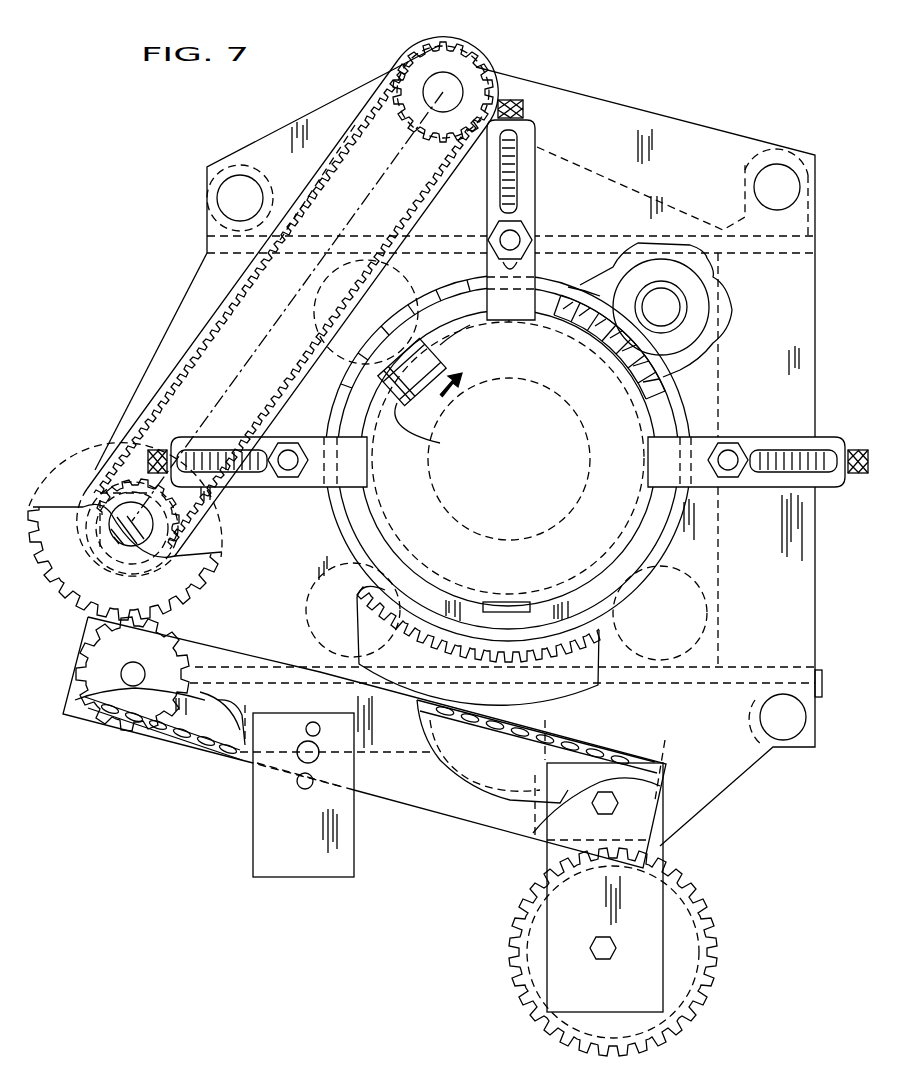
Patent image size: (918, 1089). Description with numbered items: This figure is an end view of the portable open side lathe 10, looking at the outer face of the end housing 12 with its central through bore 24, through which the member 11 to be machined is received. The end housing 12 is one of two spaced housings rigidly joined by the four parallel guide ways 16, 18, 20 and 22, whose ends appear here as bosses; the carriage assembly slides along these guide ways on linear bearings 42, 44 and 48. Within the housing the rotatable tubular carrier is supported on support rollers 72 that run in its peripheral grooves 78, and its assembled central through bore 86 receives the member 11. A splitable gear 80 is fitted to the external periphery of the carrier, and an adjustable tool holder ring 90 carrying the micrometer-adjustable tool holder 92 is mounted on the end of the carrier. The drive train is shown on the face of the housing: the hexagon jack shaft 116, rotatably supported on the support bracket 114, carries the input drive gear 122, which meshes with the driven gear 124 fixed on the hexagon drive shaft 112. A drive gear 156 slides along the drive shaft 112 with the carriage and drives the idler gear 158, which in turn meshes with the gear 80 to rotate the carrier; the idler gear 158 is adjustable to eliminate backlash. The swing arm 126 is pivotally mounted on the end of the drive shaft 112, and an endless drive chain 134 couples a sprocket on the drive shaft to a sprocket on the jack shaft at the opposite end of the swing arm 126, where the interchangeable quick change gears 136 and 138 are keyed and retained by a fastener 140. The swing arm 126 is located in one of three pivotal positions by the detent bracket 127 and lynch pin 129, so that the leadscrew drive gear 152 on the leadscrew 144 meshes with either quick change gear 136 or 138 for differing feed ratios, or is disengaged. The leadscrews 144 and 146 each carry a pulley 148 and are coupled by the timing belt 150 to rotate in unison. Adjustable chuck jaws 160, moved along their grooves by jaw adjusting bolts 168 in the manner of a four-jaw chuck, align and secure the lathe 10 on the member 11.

The portable open side lathe 10 is at (366, 932).
The member to be machined 11 is at (700, 510).
The end housing 12 is at (676, 131).
The guide way 16 is at (776, 179).
The guide way 18 is at (240, 198).
The guide way 20 is at (232, 740).
The guide way 22 is at (777, 719).
The central through bore 24 is at (568, 287).
The linear bearing 42 is at (745, 163).
The linear bearing 44 is at (243, 165).
The linear bearing 48 is at (756, 722).
The support rollers 72 is at (700, 320).
The peripheral grooves 78 is at (690, 369).
The gear 80 is at (383, 611).
The central through bore 86 is at (463, 325).
The adjustable tool holder ring 90 is at (432, 349).
The adjustable tool holder 92 is at (350, 203).
The hexagon drive shaft 112 is at (618, 803).
The support bracket 114 is at (545, 998).
The hexagon jack shaft 116 is at (590, 946).
The input drive gear 122 is at (675, 988).
The driven gear 124 is at (545, 807).
The swing arm 126 is at (410, 803).
The detent bracket 127 is at (318, 873).
The lynch pin 129 is at (305, 757).
The endless drive chain 134 is at (180, 737).
The quick change gear 136 is at (80, 656).
The quick change gear 138 is at (85, 700).
The fastener 140 is at (140, 700).
The leadscrew 144 is at (145, 524).
The leadscrew 146 is at (400, 60).
The pulley 148 is at (470, 43).
The timing belt 150 is at (215, 291).
The leadscrew drive gear 152 is at (52, 582).
The drive gear 156 is at (625, 743).
The idler gear 158 is at (470, 666).
The adjustable chuck jaws 160 is at (535, 143).
The jaw adjusting bolt 168 is at (515, 100).